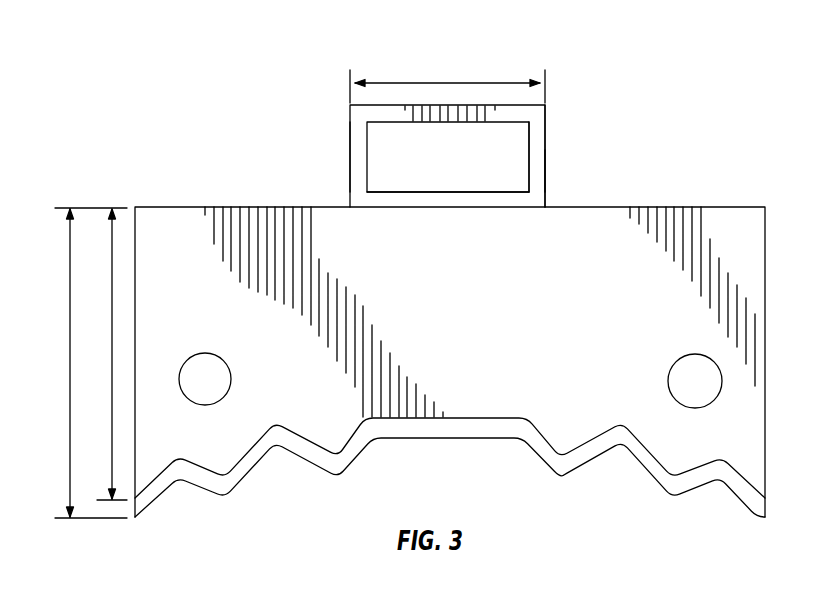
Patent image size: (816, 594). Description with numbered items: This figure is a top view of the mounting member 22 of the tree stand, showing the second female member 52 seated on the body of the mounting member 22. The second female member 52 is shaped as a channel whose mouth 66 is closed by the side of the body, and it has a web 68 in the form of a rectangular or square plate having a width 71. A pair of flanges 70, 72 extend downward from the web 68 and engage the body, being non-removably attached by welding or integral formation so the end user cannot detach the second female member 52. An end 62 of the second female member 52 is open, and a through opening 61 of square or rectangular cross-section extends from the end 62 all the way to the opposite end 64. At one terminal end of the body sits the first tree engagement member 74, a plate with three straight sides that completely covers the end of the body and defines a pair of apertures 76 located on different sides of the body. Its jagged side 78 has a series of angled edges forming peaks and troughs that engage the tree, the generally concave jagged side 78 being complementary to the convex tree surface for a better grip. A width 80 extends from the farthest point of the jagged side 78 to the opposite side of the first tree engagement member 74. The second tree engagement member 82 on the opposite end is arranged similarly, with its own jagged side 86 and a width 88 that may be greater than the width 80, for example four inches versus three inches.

The mounting member 22 is at (168, 182).
The second female member 52 is at (349, 178).
The through opening 61 is at (443, 156).
The end 62 is at (537, 143).
The opposite end 64 is at (540, 157).
The mouth 66 is at (455, 192).
The web 68 is at (537, 120).
The flange 70 is at (533, 168).
The width 71 is at (450, 80).
The flange 72 is at (360, 153).
The first tree engagement member 74 is at (466, 326).
The apertures 76 is at (217, 380).
The jagged side 78 is at (490, 419).
The width 80 is at (112, 352).
The second tree engagement member 82 is at (693, 483).
The jagged side 86 is at (337, 478).
The width 88 is at (70, 377).